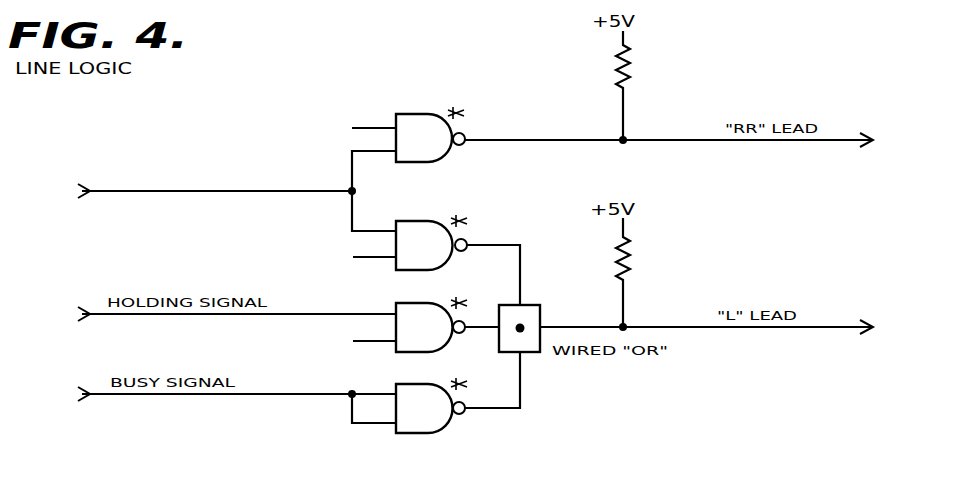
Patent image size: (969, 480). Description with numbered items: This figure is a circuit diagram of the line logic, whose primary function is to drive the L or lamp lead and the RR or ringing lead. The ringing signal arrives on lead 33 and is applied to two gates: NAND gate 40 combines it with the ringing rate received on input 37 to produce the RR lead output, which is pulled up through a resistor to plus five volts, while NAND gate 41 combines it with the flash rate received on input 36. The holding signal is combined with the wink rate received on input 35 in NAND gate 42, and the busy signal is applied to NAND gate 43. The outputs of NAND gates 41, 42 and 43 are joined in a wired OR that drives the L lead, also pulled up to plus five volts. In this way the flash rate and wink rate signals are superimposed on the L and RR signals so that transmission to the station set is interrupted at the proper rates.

The ringing signal lead 33 is at (143, 191).
The wink rate input 35 is at (380, 341).
The flash rate input 36 is at (380, 257).
The ringing rate input 37 is at (362, 128).
The NAND gate 40 is at (440, 159).
The NAND gate 41 is at (428, 221).
The NAND gate 42 is at (443, 350).
The NAND gate 43 is at (443, 432).